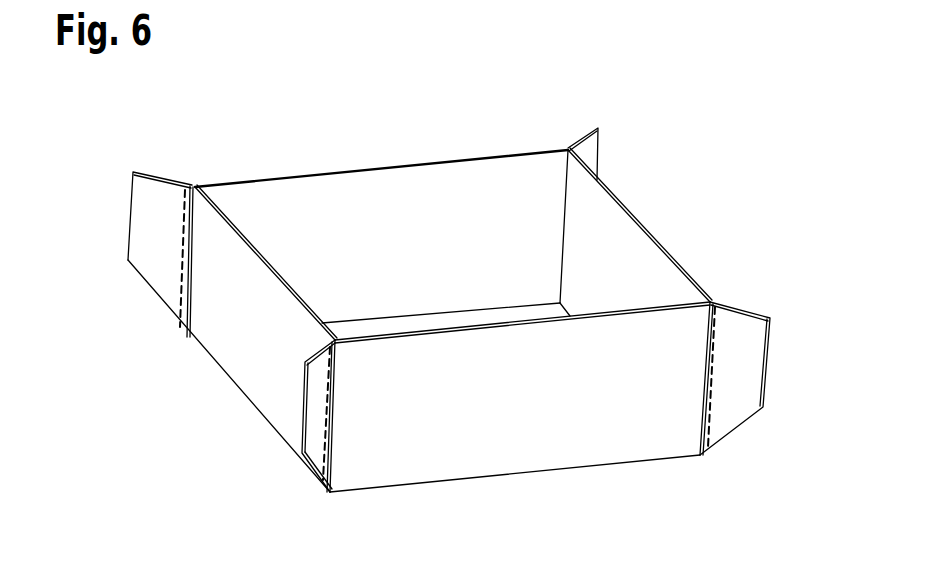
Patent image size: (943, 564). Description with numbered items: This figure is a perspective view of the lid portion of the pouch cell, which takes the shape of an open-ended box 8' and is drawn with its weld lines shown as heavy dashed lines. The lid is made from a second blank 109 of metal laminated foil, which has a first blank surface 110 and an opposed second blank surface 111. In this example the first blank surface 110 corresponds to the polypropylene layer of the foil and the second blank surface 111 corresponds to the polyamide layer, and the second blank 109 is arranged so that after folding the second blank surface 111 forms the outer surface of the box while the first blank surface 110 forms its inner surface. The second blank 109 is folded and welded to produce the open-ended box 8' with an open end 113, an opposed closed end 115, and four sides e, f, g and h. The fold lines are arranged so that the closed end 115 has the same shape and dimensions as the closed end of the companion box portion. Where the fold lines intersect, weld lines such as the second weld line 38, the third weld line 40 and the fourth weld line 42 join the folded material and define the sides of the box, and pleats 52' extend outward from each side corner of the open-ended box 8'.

The open-ended box 8' is at (770, 97).
The pleats 52' is at (435, 313).
The third weld line 40 is at (183, 254).
The fourth weld line 42 is at (330, 445).
The second weld line 38 is at (712, 430).
The second blank 109 is at (613, 447).
The first blank surface 110 is at (397, 188).
The second blank surface 111 is at (238, 343).
The open end 113 is at (655, 240).
The closed end 115 is at (477, 318).
The side e is at (608, 230).
The side f is at (303, 197).
The side g is at (275, 383).
The side h is at (522, 455).